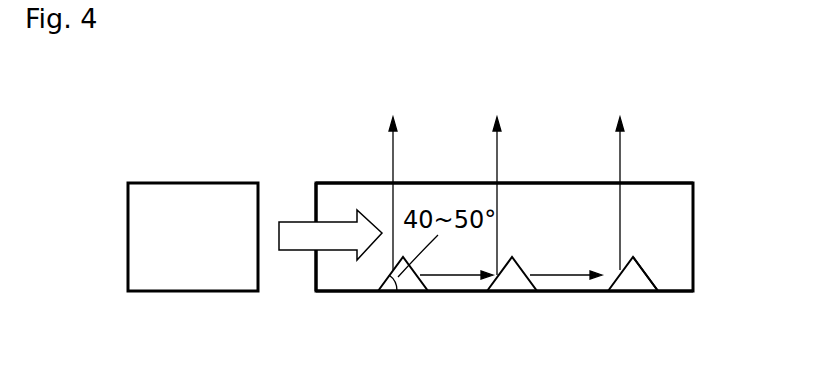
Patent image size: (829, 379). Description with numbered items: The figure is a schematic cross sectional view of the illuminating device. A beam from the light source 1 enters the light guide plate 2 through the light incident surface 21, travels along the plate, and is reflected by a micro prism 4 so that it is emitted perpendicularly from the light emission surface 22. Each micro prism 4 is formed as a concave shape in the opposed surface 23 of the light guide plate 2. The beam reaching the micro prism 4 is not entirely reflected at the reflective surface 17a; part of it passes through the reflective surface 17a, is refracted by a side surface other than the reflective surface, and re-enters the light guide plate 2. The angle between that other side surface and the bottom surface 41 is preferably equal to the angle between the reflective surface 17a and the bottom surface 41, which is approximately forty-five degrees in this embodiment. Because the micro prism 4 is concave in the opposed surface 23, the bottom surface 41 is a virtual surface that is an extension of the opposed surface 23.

The light source 1 is at (192, 207).
The light guide plate 2 is at (662, 225).
The light incident surface 21 is at (315, 272).
The light emission surface 22 is at (365, 180).
The opposed surface 23 is at (338, 292).
The micro prism 4 is at (630, 280).
The bottom surface 41 is at (637, 292).
The reflective surface 17a is at (615, 270).